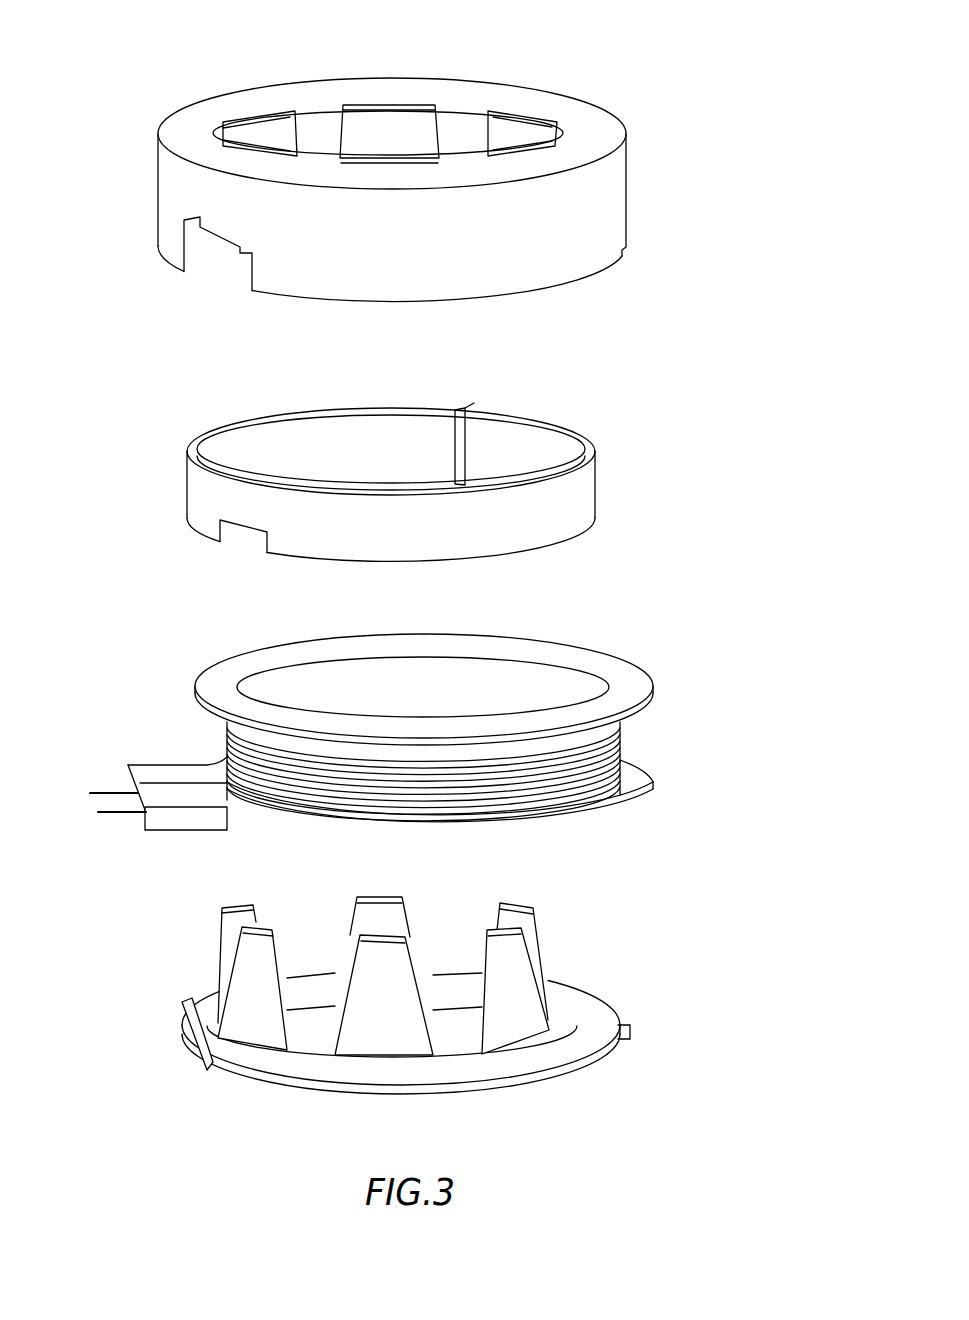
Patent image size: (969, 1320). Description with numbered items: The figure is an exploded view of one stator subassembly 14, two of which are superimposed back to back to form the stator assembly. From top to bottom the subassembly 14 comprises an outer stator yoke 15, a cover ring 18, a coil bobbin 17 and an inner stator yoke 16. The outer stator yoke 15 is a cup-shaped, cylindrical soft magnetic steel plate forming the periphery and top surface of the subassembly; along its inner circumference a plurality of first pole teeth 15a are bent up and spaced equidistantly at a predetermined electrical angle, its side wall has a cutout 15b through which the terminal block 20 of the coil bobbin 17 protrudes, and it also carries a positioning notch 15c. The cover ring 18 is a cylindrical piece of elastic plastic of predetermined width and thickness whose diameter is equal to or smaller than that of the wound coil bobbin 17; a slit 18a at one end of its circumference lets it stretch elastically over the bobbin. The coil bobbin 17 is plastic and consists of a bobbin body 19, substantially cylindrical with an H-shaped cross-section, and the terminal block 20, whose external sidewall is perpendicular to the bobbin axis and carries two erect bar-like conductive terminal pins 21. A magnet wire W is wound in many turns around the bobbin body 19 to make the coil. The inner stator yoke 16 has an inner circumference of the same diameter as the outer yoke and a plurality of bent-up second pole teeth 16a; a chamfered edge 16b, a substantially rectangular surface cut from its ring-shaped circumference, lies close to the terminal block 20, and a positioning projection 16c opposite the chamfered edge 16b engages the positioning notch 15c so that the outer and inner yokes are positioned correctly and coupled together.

The stator subassembly 14 is at (753, 51).
The outer stator yoke 15 is at (596, 196).
The first pole teeth 15a is at (313, 135).
The cutout 15b is at (188, 218).
The positioning notch 15c is at (627, 247).
The cover ring 18 is at (585, 491).
The slit 18a is at (457, 437).
The coil bobbin 17 is at (456, 712).
The bobbin body 19 is at (525, 690).
The magnet wire W is at (620, 752).
The terminal block 20 is at (170, 767).
The terminal pins 21 is at (128, 815).
The inner stator yoke 16 is at (408, 999).
The second pole teeth 16a is at (250, 955).
The chamfered edge 16b is at (197, 1050).
The positioning projection 16c is at (630, 1030).